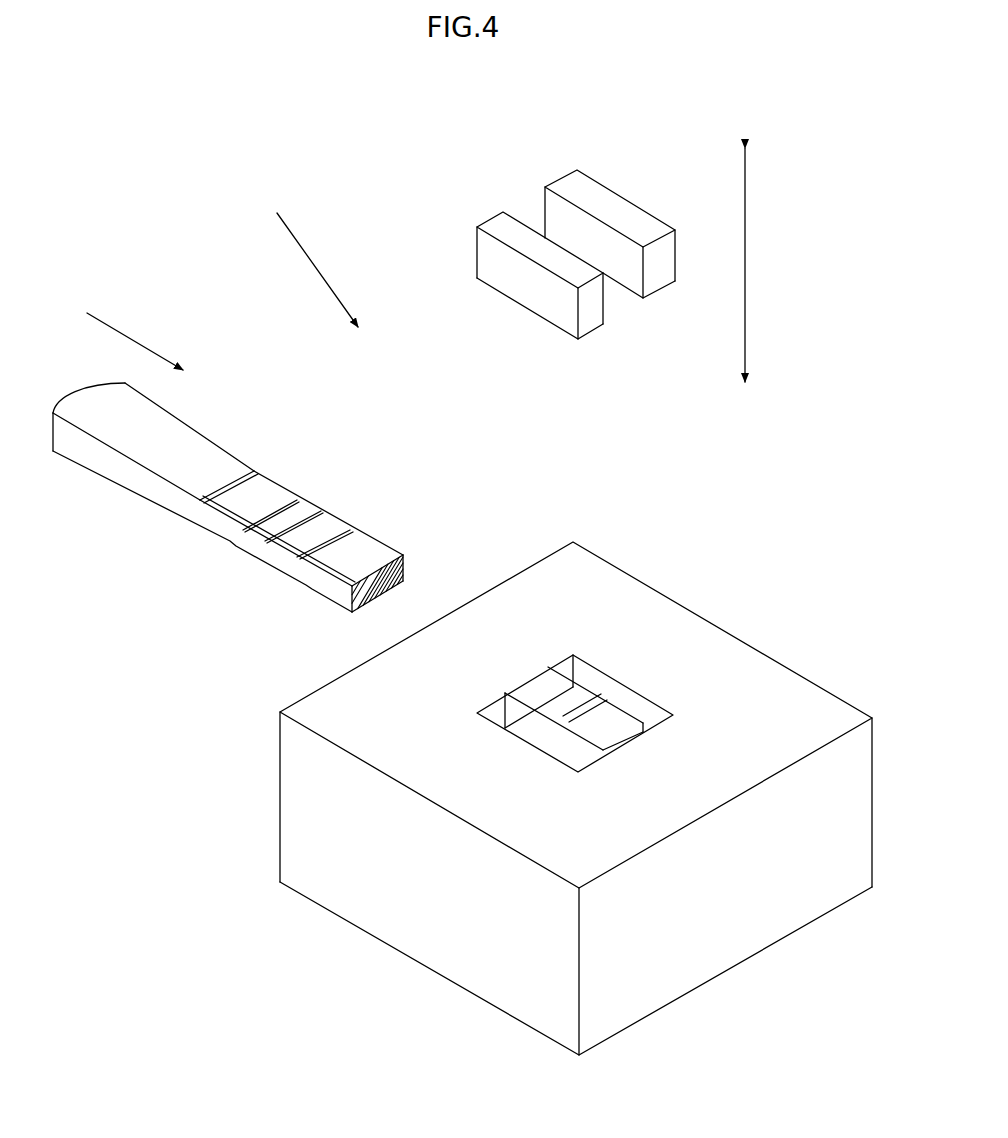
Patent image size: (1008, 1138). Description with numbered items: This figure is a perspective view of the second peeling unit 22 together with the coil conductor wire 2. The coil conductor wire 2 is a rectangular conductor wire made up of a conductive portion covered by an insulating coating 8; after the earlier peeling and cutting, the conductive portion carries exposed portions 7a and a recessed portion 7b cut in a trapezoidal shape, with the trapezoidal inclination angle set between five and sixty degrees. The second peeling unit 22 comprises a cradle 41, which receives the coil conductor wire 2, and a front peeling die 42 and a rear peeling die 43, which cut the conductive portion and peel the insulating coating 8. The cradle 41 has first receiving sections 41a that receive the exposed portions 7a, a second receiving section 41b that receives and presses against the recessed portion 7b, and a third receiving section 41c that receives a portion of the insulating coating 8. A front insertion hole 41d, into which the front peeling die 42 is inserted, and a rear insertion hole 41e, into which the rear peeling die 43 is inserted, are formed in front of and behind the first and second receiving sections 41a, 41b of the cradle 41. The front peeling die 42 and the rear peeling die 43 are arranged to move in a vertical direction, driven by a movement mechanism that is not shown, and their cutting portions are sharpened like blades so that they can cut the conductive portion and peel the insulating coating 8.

The coil conductor wire 2 is at (235, 497).
The exposed portions 7a is at (273, 480).
The recessed portion 7b is at (297, 518).
The insulating coating 8 is at (297, 547).
The second peeling unit 22 is at (310, 257).
The cradle 41 is at (576, 782).
The first receiving sections 41a is at (572, 680).
The second receiving section 41b is at (623, 715).
The third receiving section 41c is at (458, 637).
The front insertion hole 41d is at (492, 712).
The rear insertion hole 41e is at (565, 683).
The front peeling die 42 is at (493, 222).
The rear peeling die 43 is at (611, 205).